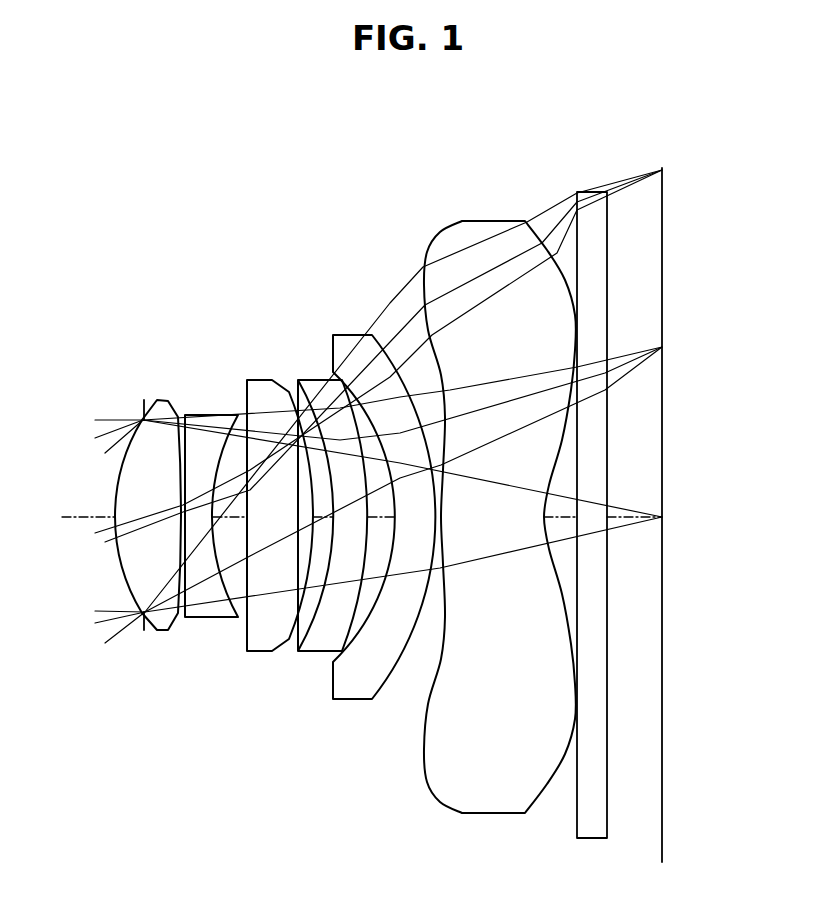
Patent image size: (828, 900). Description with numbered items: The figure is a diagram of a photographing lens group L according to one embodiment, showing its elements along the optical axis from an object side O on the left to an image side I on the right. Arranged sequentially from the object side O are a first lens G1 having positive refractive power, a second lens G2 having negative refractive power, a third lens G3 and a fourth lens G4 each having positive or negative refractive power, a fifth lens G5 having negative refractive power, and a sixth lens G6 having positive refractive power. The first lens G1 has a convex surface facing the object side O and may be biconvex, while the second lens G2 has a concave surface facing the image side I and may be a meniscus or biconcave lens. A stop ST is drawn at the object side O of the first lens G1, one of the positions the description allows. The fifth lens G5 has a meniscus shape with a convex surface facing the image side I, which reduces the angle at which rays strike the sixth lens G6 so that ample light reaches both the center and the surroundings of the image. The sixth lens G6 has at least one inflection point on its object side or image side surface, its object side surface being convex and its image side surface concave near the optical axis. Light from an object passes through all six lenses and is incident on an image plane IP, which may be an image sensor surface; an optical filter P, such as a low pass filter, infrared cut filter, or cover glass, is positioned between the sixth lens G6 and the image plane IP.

The photographing lens group L is at (108, 283).
The stop ST is at (143, 410).
The first lens G1 is at (165, 400).
The second lens G2 is at (207, 415).
The third lens G3 is at (260, 380).
The fourth lens G4 is at (310, 380).
The fifth lens G5 is at (347, 335).
The sixth lens G6 is at (487, 221).
The optical filter P is at (591, 192).
The image plane IP is at (663, 227).
The object side O is at (75, 518).
The image side I is at (643, 518).